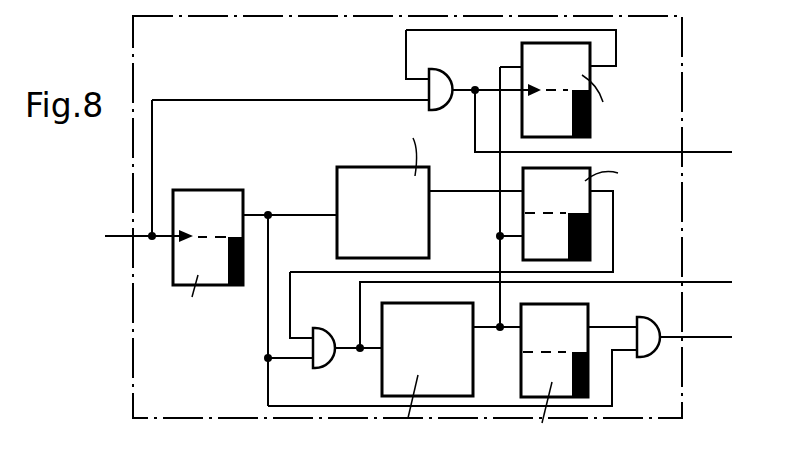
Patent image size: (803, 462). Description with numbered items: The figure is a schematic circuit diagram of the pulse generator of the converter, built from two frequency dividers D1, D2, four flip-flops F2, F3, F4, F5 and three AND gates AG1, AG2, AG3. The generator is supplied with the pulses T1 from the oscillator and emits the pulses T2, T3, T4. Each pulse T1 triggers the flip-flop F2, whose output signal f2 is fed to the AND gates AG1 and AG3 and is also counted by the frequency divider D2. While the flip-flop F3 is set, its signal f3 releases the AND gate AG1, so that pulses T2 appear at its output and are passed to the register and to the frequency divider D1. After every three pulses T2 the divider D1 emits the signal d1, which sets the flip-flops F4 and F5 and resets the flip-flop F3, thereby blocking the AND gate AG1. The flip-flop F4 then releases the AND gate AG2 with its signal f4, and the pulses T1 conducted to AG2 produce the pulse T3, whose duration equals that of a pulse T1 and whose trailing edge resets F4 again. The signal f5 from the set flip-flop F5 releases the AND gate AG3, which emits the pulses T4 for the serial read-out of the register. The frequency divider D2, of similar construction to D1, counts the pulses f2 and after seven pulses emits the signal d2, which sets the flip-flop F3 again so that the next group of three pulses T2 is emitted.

The AND gate AG1 is at (432, 217).
The AND gate AG2 is at (442, 91).
The AND gate AG3 is at (500, 361).
The flip-flop F2 is at (221, 253).
The flip-flop F3 is at (474, 215).
The flip-flop F4 is at (571, 187).
The flip-flop F5 is at (540, 375).
The frequency divider D1 is at (423, 373).
The frequency divider D2 is at (425, 189).
The pulses T1 is at (125, 227).
The pulses T2 is at (730, 272).
The pulse T3 is at (728, 138).
The pulses T4 is at (730, 330).
The signal f2 is at (305, 207).
The signal f3 is at (619, 205).
The signal f4 is at (623, 43).
The signal f5 is at (630, 318).
The signal d1 is at (512, 340).
The signal d2 is at (485, 201).